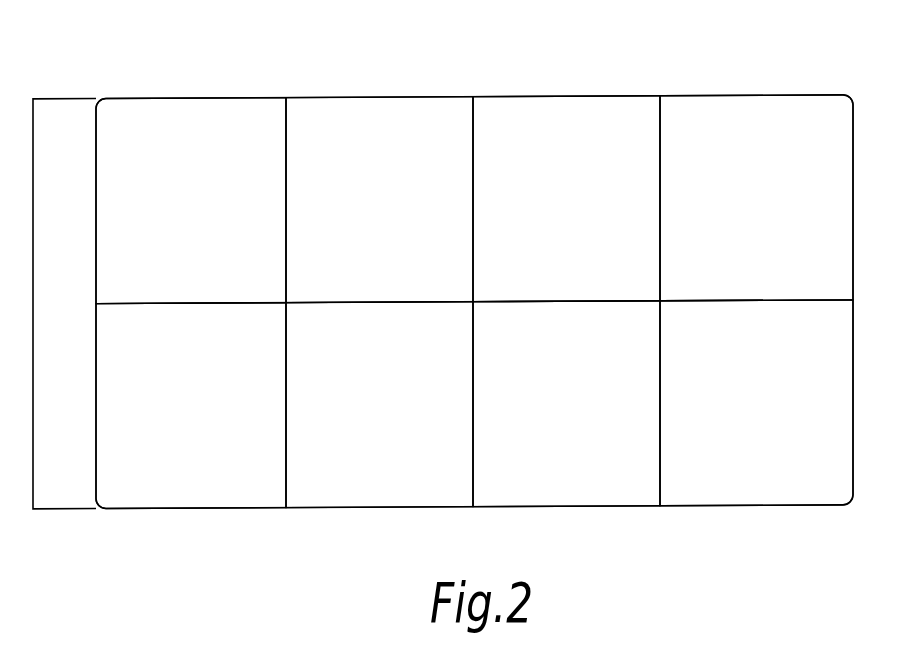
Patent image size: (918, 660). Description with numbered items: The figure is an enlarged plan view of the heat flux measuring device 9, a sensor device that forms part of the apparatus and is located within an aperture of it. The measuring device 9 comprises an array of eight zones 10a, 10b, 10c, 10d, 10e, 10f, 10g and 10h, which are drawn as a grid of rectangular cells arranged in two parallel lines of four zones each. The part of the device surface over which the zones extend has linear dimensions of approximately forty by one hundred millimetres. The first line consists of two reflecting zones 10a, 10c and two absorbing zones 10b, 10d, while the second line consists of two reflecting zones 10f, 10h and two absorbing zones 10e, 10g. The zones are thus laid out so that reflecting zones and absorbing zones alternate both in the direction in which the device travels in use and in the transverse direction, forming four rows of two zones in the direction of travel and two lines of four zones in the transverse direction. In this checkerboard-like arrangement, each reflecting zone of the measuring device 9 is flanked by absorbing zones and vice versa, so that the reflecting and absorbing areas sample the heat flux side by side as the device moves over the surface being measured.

The heat flux measuring device 9 is at (165, 99).
The reflecting zone 10a is at (207, 212).
The absorbing zone 10b is at (398, 212).
The reflecting zone 10c is at (584, 212).
The absorbing zone 10d is at (777, 212).
The absorbing zone 10e is at (174, 414).
The reflecting zone 10f is at (396, 414).
The absorbing zone 10g is at (587, 414).
The reflecting zone 10h is at (777, 414).